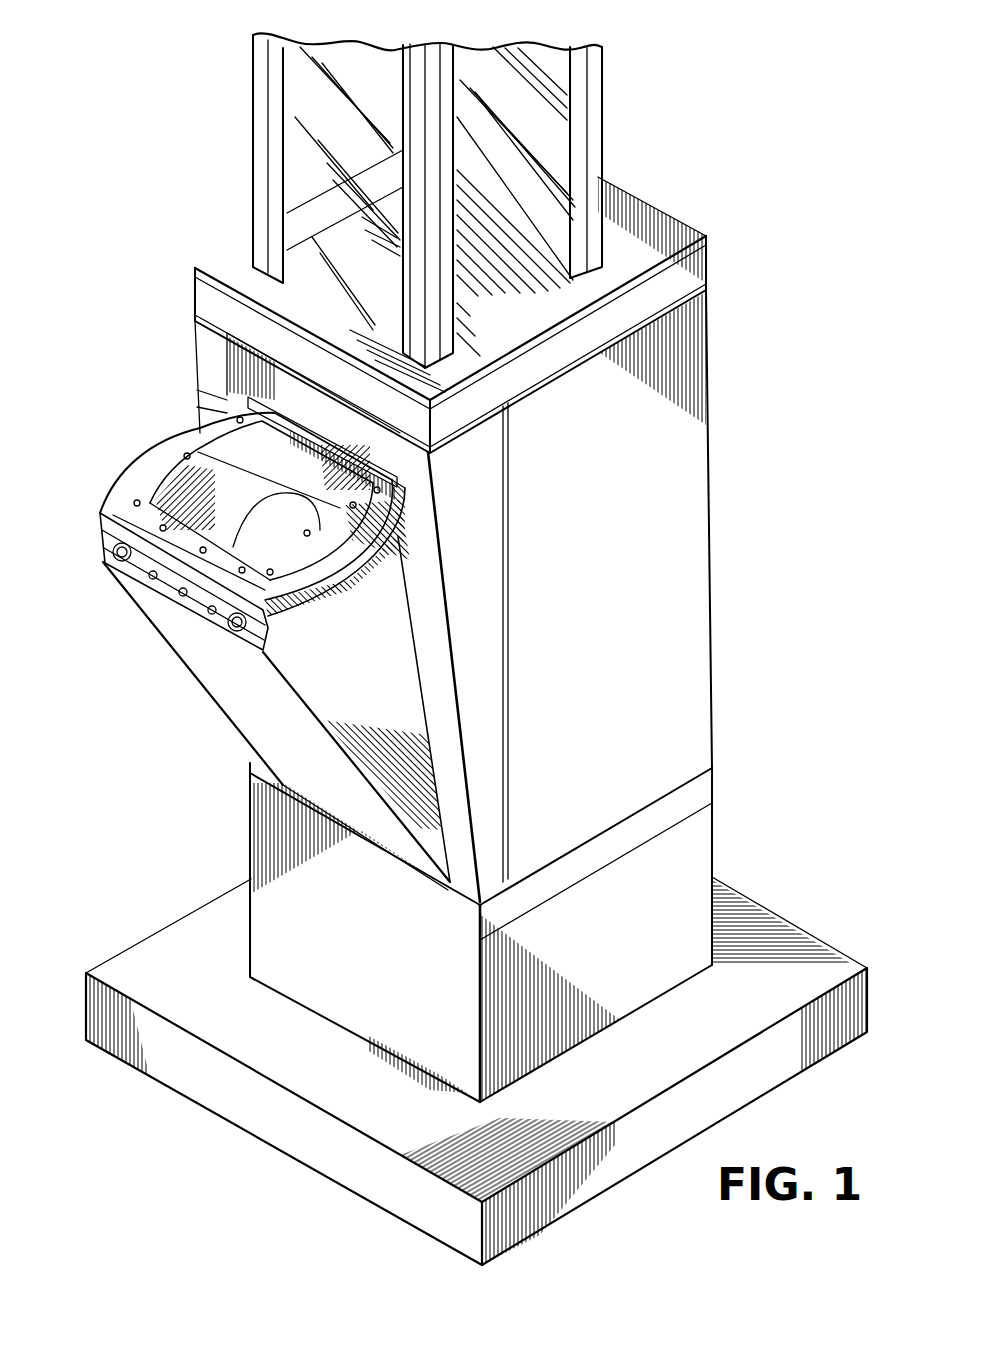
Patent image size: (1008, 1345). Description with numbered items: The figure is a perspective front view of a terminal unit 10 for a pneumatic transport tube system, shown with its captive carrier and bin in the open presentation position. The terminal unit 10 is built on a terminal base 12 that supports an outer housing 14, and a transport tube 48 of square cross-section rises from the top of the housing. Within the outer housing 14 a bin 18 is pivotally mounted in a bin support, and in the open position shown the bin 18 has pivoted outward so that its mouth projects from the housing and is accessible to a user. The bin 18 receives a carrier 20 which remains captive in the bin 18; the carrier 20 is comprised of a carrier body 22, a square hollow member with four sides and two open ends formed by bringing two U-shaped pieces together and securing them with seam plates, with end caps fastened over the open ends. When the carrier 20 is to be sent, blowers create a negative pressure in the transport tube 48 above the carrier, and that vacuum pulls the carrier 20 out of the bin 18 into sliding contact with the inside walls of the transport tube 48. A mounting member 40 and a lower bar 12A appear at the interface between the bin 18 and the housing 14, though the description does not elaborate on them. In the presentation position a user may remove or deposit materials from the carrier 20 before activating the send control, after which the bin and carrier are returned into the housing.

The terminal unit 10 is at (115, 285).
The terminal base 12 is at (633, 1085).
The mounting bar 12A is at (230, 624).
The outer housing 14 is at (703, 615).
The bin 18 is at (200, 680).
The carrier 20 is at (173, 472).
The carrier body 22 is at (306, 485).
The mounting strip 40 is at (380, 480).
The transport tube 48 is at (255, 131).